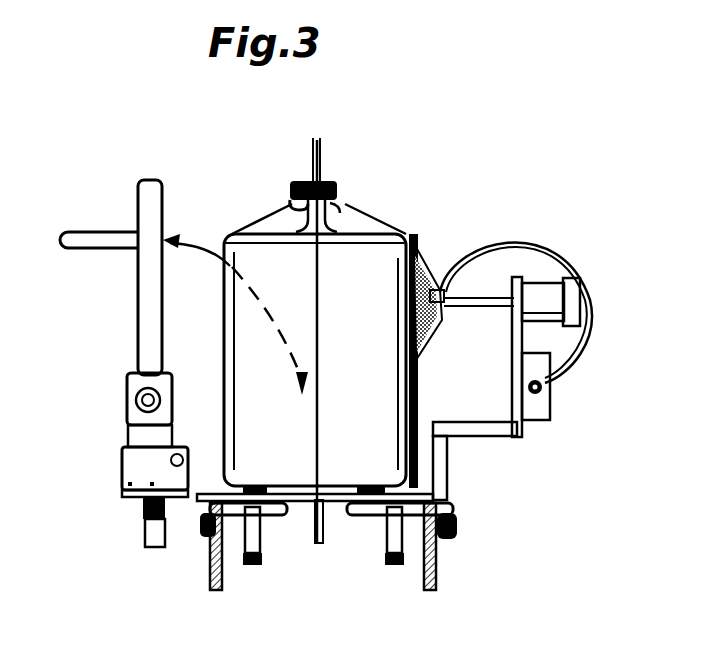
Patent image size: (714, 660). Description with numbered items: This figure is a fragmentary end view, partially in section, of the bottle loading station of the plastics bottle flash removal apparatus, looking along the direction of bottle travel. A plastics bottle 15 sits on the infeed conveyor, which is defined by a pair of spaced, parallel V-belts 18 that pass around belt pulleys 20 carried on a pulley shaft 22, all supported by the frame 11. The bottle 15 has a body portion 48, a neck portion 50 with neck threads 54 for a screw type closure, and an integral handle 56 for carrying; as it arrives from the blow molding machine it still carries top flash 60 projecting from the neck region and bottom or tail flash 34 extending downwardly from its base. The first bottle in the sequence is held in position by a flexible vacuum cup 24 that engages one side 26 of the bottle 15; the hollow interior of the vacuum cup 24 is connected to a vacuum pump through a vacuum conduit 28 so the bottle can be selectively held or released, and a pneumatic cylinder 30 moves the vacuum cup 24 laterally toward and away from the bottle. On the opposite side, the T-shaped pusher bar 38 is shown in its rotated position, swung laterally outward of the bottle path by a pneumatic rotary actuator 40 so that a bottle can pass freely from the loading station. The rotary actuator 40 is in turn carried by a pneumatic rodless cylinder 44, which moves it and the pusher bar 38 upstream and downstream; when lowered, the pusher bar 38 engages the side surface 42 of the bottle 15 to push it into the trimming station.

The frame 11 is at (145, 530).
The plastics bottle 15 is at (367, 250).
The V-belts 18 is at (393, 562).
The belt pulleys 20 is at (390, 548).
The pulley shaft 22 is at (383, 538).
The flexible vacuum cup 24 is at (423, 282).
The side of bottle 26 is at (420, 378).
The vacuum conduit 28 is at (534, 240).
The pneumatic cylinder 30 is at (547, 287).
The bottom flash 34 is at (316, 527).
The pusher bar 38 is at (140, 297).
The pneumatic rotary actuator 40 is at (128, 396).
The side surface of bottle 42 is at (373, 393).
The pneumatic rodless cylinder 44 is at (122, 460).
The body portion 48 is at (280, 254).
The neck portion 50 is at (340, 208).
The neck threads 54 is at (338, 194).
The handle 56 is at (305, 206).
The top flash 60 is at (313, 152).